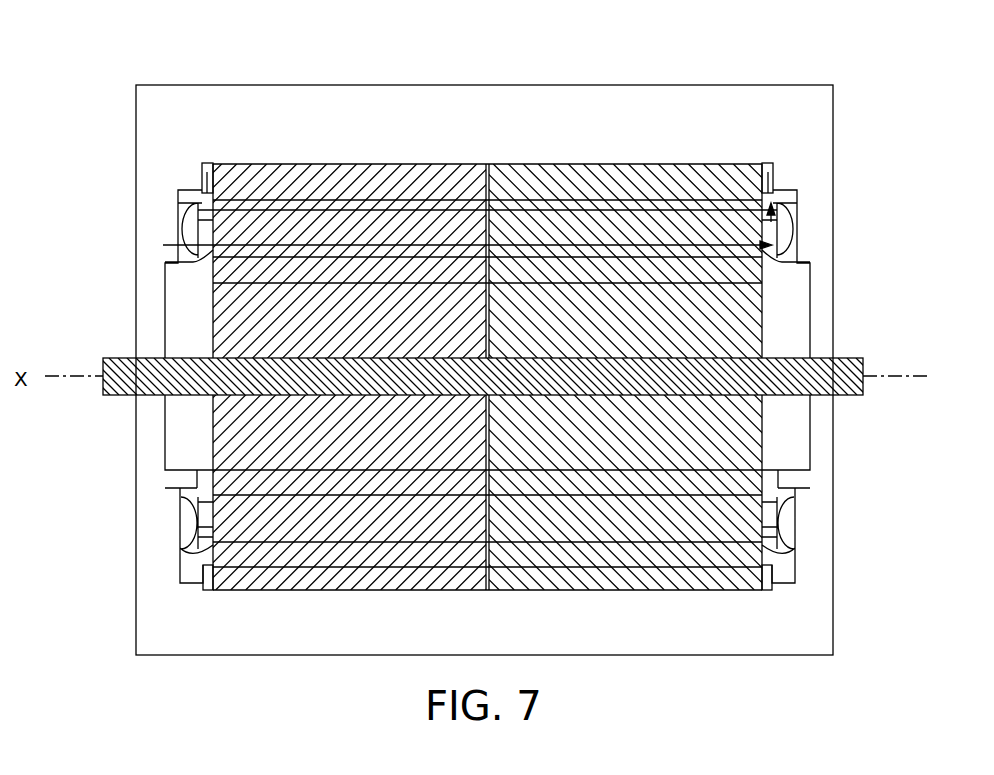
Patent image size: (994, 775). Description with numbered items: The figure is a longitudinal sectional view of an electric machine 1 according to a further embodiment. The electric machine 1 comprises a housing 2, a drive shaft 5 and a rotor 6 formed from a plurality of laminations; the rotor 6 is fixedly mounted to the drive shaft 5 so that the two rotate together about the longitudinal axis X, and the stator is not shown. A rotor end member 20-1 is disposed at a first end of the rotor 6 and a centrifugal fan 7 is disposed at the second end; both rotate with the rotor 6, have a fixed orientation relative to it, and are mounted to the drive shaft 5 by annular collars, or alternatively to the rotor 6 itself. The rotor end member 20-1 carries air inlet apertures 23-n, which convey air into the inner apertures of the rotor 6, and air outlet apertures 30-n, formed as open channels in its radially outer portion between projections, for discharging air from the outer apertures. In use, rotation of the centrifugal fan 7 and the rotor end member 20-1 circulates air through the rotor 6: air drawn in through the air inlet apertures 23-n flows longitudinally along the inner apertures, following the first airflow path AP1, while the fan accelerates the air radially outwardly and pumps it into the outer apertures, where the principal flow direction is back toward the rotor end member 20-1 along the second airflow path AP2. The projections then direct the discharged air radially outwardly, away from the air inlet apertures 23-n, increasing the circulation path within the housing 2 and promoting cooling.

The electric machine 1 is at (873, 177).
The housing 2 is at (835, 122).
The drive shaft 5 is at (123, 396).
The rotor 6 is at (232, 443).
The centrifugal fan 7 is at (788, 480).
The rotor end member 20-1 is at (205, 480).
The air inlet apertures 23-n is at (197, 240).
The air outlet apertures 30-n is at (216, 205).
The first airflow path AP1 is at (467, 234).
The second airflow path AP2 is at (670, 198).